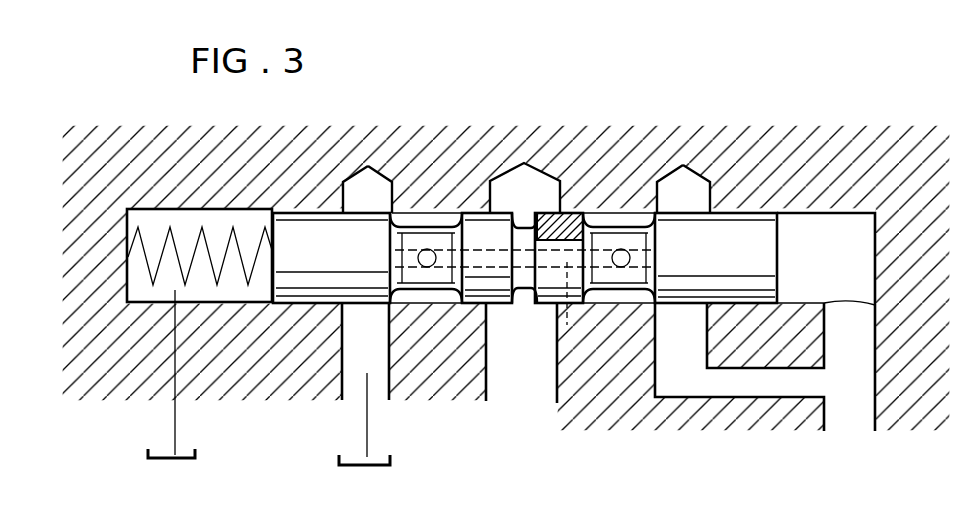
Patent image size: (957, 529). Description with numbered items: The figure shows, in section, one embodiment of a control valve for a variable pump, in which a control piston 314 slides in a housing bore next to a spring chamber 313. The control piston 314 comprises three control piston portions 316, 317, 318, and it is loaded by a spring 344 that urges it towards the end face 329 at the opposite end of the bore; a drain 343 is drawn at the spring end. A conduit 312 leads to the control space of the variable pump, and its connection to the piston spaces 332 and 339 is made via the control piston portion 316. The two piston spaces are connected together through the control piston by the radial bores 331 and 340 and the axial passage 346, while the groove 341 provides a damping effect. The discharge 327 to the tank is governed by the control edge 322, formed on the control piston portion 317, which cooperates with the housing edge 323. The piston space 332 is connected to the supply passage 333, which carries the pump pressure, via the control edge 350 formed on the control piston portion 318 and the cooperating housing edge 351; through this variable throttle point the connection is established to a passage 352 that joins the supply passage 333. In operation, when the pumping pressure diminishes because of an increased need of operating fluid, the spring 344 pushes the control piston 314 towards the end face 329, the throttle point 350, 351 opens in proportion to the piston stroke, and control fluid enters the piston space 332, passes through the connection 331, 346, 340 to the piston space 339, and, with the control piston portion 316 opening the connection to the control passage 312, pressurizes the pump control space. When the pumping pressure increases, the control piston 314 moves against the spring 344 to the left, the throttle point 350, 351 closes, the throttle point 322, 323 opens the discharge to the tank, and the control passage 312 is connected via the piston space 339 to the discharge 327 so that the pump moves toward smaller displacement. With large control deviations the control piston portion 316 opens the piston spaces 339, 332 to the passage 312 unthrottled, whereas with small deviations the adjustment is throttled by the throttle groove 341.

The conduit 312 is at (531, 378).
The spring chamber 313 is at (145, 203).
The control piston 314 is at (285, 232).
The control piston portion 316 is at (496, 222).
The control piston portion 317 is at (342, 251).
The control piston portion 318 is at (755, 233).
The control edge 322 is at (345, 212).
The housing edge 323 is at (383, 222).
The discharge 327 is at (355, 360).
The end face 329 is at (842, 232).
The radial bore 331 is at (624, 267).
The piston space 332 is at (626, 228).
The supply passage 333 is at (858, 370).
The piston space 339 is at (442, 213).
The radial bore 340 is at (427, 267).
The groove 341 is at (571, 213).
The drain line 343 is at (138, 290).
The spring 344 is at (223, 268).
The axial passage 346 is at (581, 305).
The control edge 350 is at (645, 228).
The housing edge 351 is at (712, 190).
The passage 352 is at (688, 372).